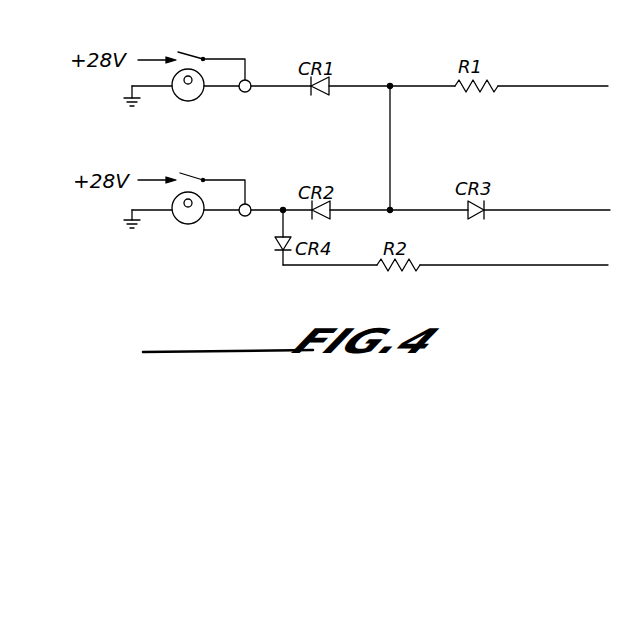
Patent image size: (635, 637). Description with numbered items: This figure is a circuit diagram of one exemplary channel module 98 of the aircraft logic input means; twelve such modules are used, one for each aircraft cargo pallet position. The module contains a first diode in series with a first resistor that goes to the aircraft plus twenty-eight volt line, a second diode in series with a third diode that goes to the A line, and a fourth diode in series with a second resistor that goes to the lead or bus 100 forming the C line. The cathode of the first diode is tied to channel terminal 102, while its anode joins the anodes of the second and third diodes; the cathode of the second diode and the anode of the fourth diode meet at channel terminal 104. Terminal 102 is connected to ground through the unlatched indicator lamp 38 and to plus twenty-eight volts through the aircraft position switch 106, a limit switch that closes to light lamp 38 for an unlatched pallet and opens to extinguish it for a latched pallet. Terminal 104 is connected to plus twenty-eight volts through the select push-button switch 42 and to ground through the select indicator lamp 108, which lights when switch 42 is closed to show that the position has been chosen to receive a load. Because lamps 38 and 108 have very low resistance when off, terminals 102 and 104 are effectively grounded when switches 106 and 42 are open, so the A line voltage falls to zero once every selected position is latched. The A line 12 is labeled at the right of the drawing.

The aircraft position switch 106 is at (192, 52).
The channel terminal 102 is at (250, 81).
The unlatched indicator lamp 38 is at (170, 79).
The channel module 98 is at (533, 39).
The aircraft position select push-button switch 42 is at (194, 169).
The channel terminal 104 is at (250, 205).
The select indicator lamp 108 is at (170, 201).
The A line 12 is at (592, 211).
The lead or bus (C line) 100 is at (608, 266).